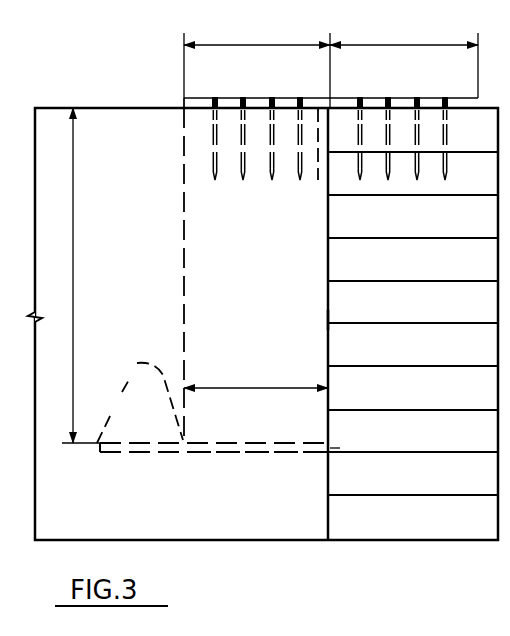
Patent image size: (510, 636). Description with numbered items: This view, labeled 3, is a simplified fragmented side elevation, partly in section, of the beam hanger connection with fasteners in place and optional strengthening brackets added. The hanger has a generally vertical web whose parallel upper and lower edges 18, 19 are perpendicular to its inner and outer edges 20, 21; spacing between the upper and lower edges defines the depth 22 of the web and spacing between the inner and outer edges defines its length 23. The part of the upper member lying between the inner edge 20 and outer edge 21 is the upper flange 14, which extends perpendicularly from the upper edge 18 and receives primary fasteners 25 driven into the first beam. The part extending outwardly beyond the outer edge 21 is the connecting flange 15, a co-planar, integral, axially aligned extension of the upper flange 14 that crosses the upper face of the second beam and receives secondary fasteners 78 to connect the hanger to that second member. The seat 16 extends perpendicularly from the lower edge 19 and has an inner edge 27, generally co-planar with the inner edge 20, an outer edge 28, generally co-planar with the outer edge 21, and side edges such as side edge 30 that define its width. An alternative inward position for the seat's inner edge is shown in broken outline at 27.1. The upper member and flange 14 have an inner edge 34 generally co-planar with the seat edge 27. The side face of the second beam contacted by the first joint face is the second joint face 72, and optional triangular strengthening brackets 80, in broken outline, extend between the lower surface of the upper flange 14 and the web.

The pallet assembly 3 is at (509, 16).
The upper flange 14 is at (274, 45).
The connecting flange 15 is at (428, 45).
The seat 16 is at (205, 458).
The upper edge 18 is at (203, 108).
The lower edge 19 is at (292, 456).
The inner edge 20 is at (184, 206).
The outer edge 21 is at (330, 278).
The depth 22 is at (73, 255).
The length 23 is at (276, 388).
The primary fasteners 25 is at (243, 97).
The inner edge 27 is at (136, 396).
The alternative location 27.1 is at (118, 410).
The outer edge 28 is at (332, 450).
The side edge 30 is at (509, 588).
The inner edge 34 is at (184, 98).
The second joint face 72 is at (328, 323).
The secondary fasteners 78 is at (388, 98).
The strengthening brackets 80 is at (318, 180).